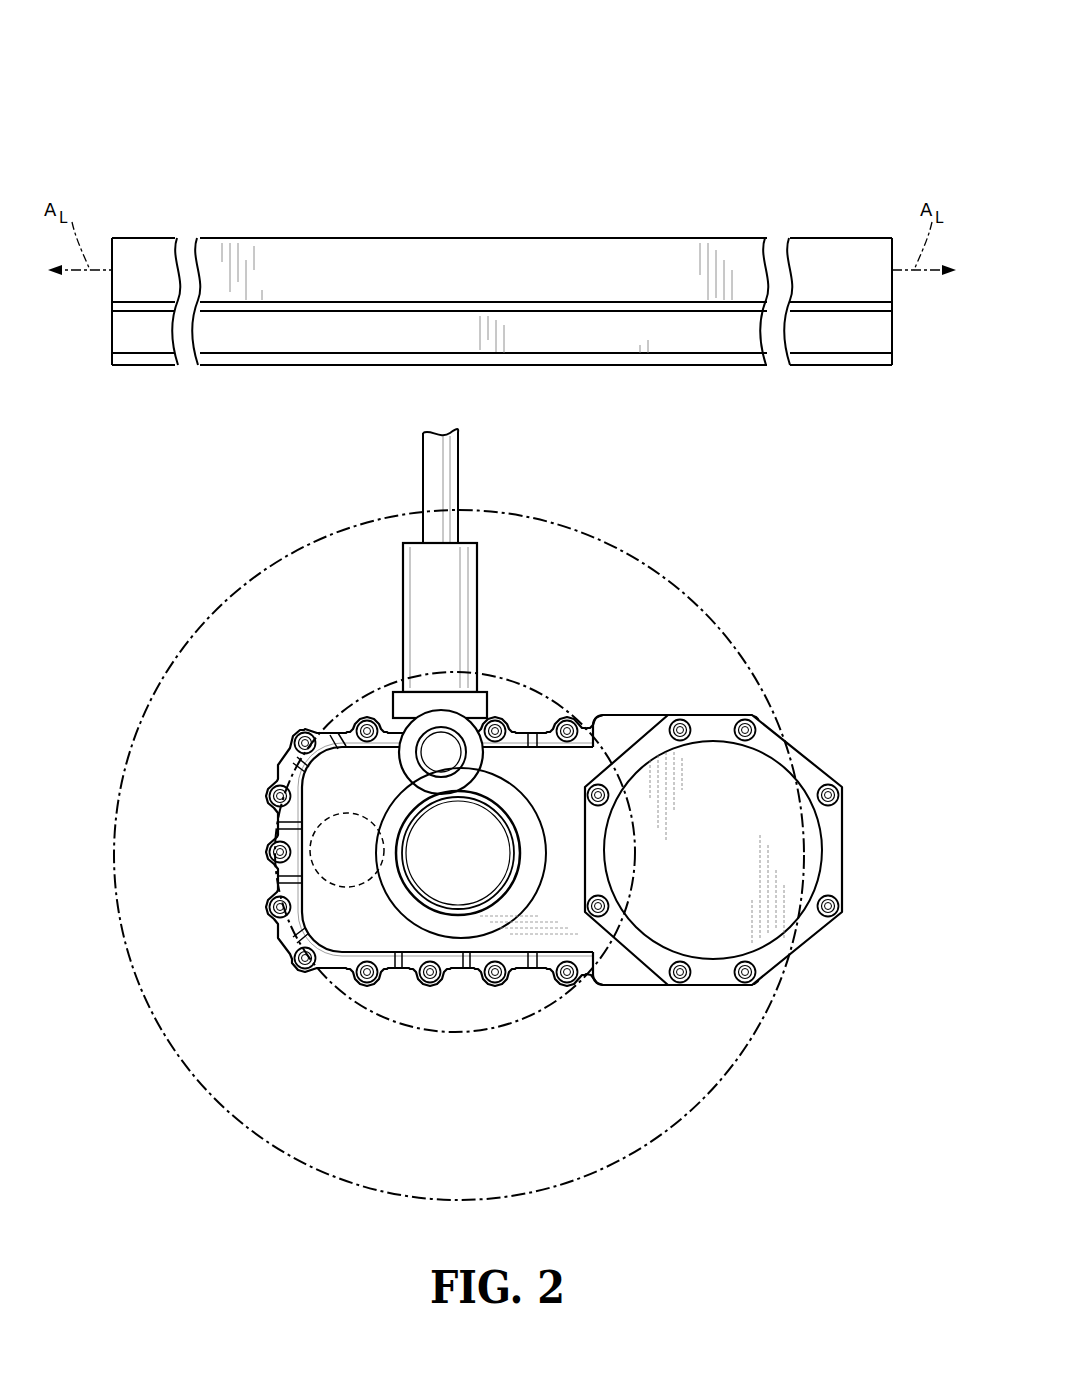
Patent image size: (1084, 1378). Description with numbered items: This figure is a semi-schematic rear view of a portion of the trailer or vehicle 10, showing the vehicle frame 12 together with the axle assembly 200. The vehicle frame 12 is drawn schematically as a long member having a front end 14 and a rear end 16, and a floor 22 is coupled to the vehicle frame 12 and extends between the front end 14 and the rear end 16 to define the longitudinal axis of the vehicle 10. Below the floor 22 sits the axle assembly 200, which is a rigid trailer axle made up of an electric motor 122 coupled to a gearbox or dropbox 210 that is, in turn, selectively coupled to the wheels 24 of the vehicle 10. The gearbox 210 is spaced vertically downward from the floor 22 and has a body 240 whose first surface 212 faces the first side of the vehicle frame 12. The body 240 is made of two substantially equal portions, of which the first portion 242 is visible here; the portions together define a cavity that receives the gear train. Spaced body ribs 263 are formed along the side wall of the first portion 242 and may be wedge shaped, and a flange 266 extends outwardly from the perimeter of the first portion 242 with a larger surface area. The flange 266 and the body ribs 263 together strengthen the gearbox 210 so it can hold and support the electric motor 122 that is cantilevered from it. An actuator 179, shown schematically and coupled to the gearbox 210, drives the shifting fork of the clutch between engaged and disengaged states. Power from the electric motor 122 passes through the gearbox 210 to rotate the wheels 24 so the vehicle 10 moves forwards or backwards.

The trailer or vehicle 10 is at (740, 88).
The vehicle frame 12 is at (676, 366).
The front end 14 is at (112, 320).
The rear end 16 is at (892, 320).
The floor 22 is at (582, 262).
The wheels 24 is at (607, 592).
The axle assembly 200 is at (645, 702).
The gearbox or dropbox 210 is at (466, 869).
The first surface 212 is at (578, 762).
The electric motor 122 is at (760, 790).
The first portion 242 is at (340, 775).
The actuator 179 is at (303, 812).
The body 240 is at (278, 873).
The body ribs 263 is at (355, 716).
The flange 266 is at (613, 985).